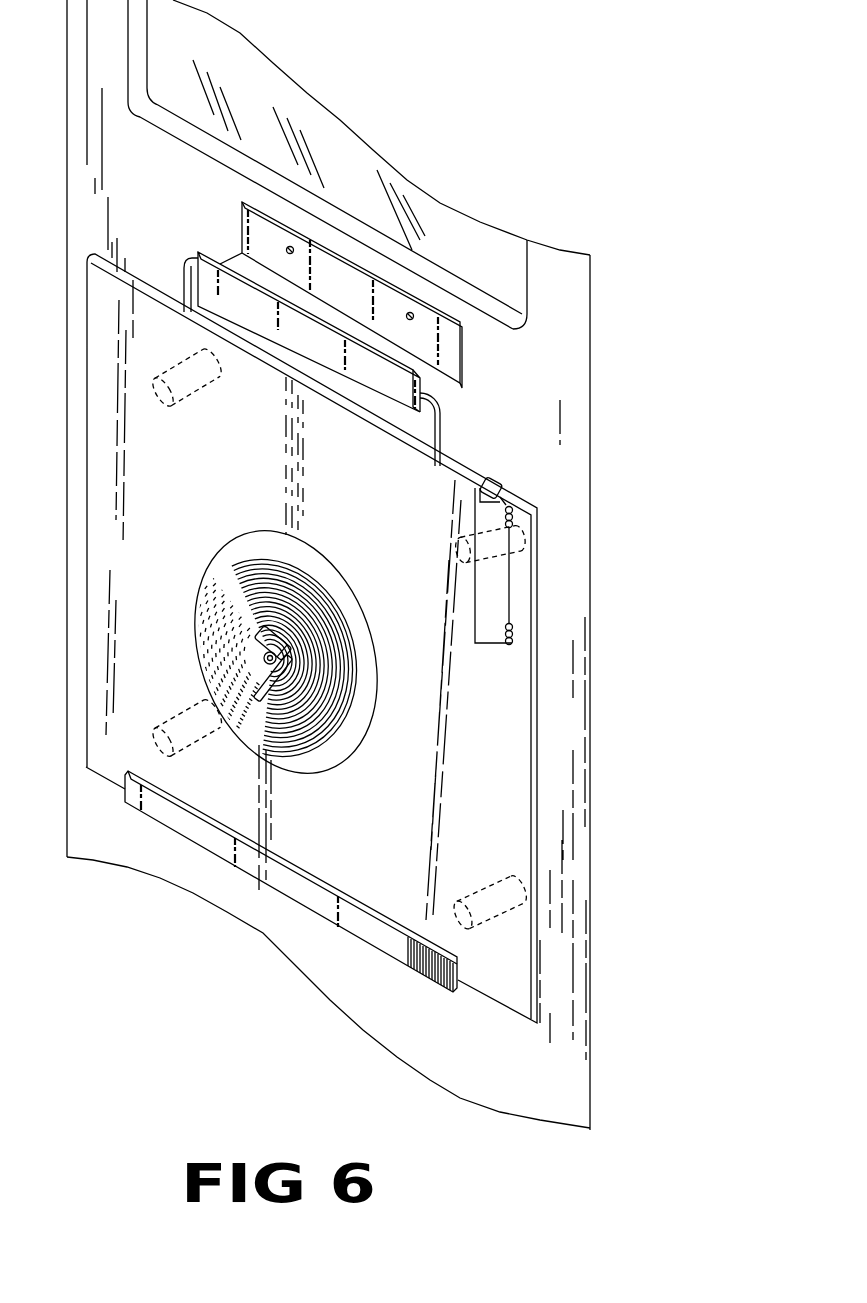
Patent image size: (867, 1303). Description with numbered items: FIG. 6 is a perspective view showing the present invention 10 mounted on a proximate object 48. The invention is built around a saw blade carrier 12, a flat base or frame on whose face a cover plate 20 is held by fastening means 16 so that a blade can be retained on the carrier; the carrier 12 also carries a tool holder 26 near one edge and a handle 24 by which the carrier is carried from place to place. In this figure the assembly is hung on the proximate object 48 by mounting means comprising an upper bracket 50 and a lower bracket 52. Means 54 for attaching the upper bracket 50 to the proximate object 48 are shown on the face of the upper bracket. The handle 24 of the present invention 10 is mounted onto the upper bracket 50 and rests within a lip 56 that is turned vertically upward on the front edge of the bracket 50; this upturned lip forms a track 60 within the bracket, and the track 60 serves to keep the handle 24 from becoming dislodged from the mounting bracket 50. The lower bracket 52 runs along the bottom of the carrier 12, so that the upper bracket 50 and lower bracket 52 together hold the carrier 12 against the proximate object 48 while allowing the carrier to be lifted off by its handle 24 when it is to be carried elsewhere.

The present invention 10 is at (565, 452).
The saw blade carrier 12 is at (507, 733).
The fastening means 16 is at (276, 686).
The cover plate 20 is at (340, 750).
The handle 24 is at (440, 453).
The tool holder 26 is at (498, 585).
The proximate object 48 is at (567, 372).
The upper bracket 50 is at (243, 232).
The lower bracket 52 is at (384, 940).
The means for attaching 54 is at (414, 315).
The lip 56 is at (228, 287).
The track 60 is at (427, 373).